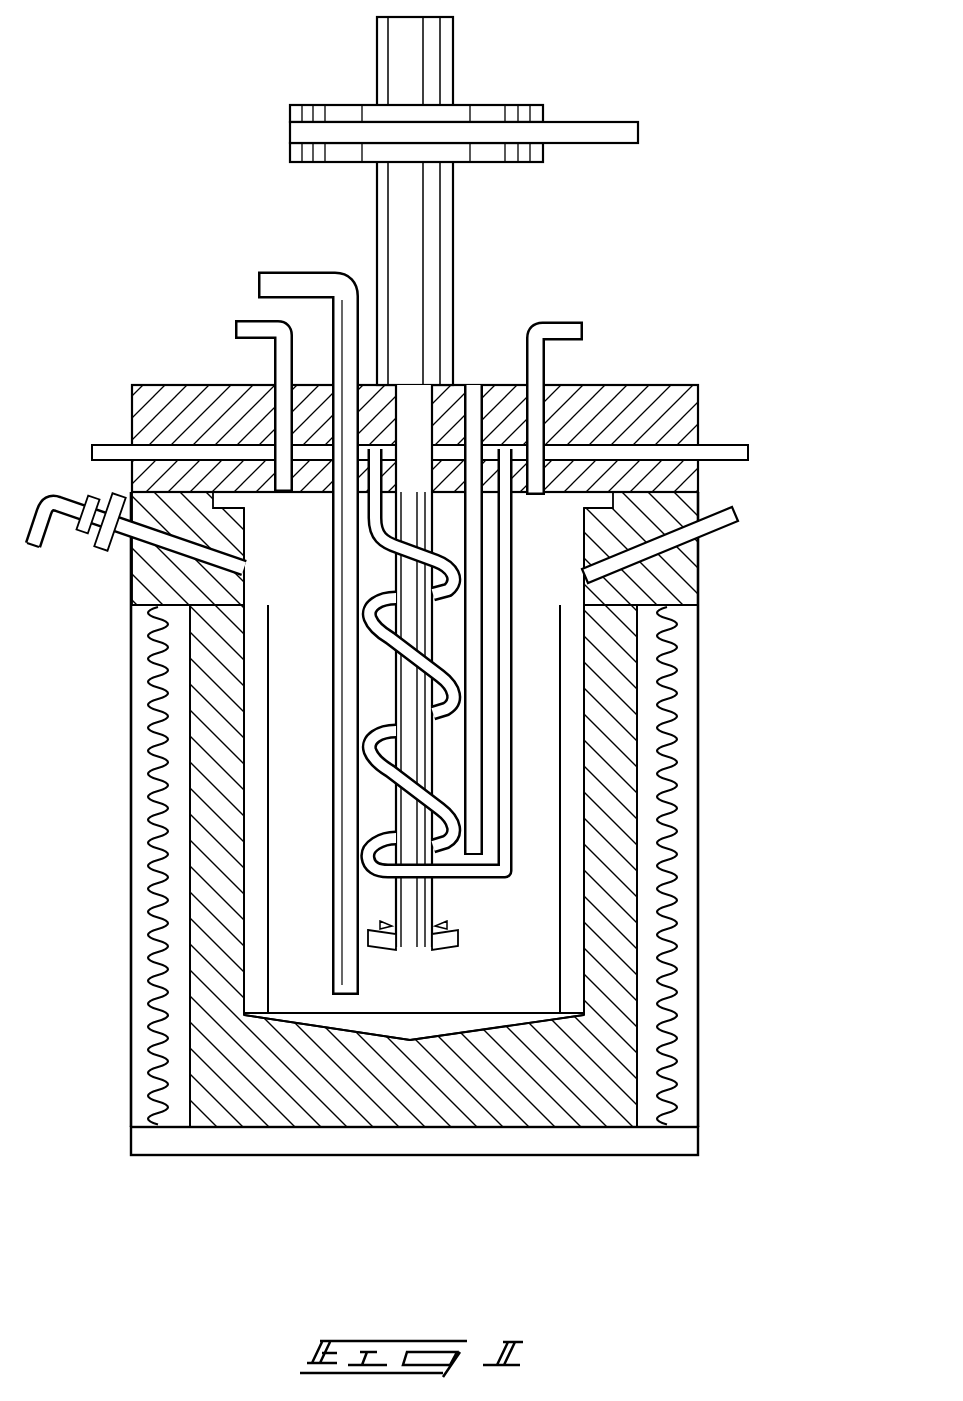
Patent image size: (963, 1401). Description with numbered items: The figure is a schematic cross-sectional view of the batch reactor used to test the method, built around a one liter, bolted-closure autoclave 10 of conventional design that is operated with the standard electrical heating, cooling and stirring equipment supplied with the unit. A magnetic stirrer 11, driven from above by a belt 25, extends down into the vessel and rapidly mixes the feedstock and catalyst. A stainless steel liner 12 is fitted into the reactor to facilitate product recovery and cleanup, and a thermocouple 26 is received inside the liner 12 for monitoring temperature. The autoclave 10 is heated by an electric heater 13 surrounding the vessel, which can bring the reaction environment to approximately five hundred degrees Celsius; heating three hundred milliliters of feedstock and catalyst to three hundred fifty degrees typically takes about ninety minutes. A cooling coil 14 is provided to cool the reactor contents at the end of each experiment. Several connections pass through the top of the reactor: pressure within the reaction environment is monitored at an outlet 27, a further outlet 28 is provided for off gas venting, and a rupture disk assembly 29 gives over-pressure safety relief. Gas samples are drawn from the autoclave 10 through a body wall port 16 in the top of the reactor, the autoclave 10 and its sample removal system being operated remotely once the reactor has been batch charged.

The autoclave 10 is at (700, 740).
The magnetic stirrer 11 is at (433, 903).
The stainless steel liner 12 is at (557, 965).
The electric heater 13 is at (670, 890).
The cooling coil 14 is at (505, 686).
The body wall port 16 is at (726, 532).
The belt 25 is at (604, 136).
The thermocouple 26 is at (474, 390).
The outlet 27 is at (252, 330).
The outlet 28 is at (550, 332).
The rupture disk assembly 29 is at (86, 535).